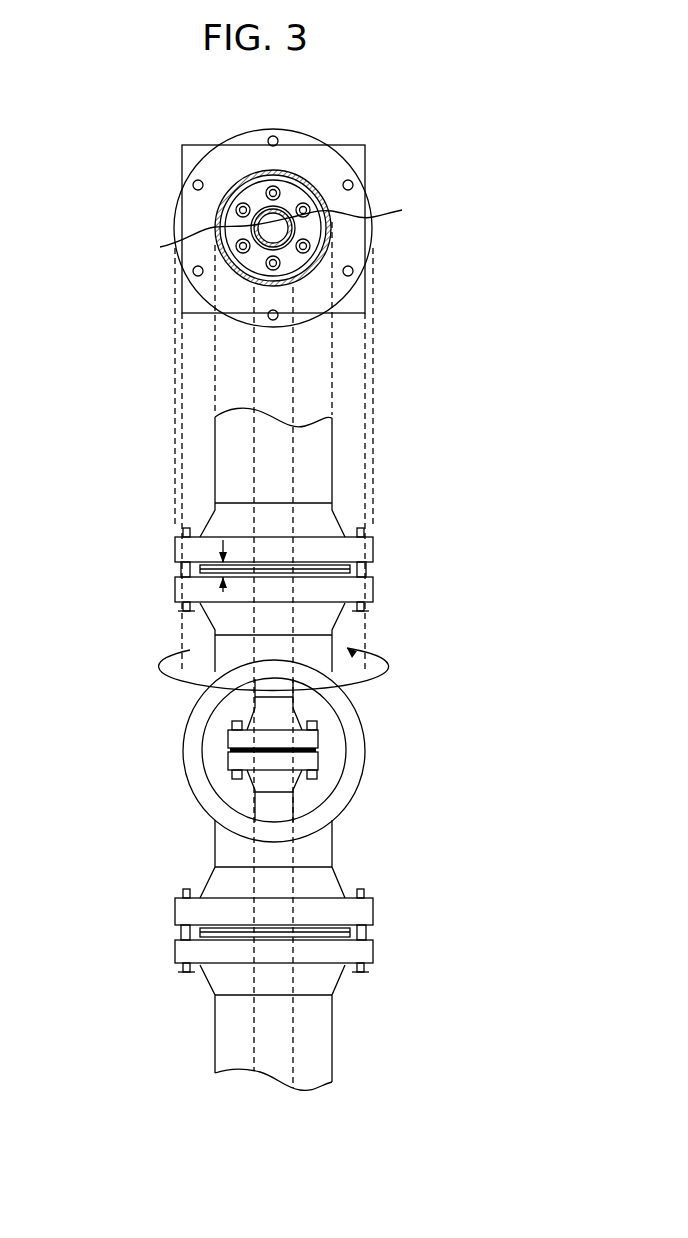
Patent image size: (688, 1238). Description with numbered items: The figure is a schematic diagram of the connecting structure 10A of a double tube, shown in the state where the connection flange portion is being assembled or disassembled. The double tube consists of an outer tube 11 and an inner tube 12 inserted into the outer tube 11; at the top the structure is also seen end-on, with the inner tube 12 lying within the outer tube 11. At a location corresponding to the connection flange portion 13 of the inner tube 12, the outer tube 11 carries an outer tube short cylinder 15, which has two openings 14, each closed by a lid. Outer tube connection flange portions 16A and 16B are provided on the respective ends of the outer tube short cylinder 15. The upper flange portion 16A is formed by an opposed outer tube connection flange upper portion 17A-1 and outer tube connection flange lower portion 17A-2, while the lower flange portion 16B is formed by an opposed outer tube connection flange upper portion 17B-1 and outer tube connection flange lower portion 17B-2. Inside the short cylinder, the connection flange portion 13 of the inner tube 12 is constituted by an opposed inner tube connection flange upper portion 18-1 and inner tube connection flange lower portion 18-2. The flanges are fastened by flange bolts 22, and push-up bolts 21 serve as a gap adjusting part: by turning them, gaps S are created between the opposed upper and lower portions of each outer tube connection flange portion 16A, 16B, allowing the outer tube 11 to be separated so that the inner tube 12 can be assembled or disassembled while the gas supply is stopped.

The connecting structure of the double tube 10A is at (112, 138).
The outer tube 11 is at (373, 217).
The inner tube 12 is at (216, 233).
The connection flange portion 13 is at (97, 725).
The opening 14 is at (367, 766).
The outer tube short cylinder 15 is at (190, 650).
The outer tube connection flange portion 16A is at (472, 540).
The outer tube connection flange portion 16B is at (485, 902).
The outer tube connection flange upper portion 17A-1 is at (377, 552).
The outer tube connection flange lower portion 17A-2 is at (377, 583).
The outer tube connection flange upper portion 17B-1 is at (378, 913).
The outer tube connection flange lower portion 17B-2 is at (378, 945).
The inner tube connection flange upper portion 18-1 is at (228, 737).
The inner tube connection flange lower portion 18-2 is at (228, 758).
The push-up bolt 21 is at (366, 608).
The flange bolt 22 is at (187, 528).
The gap S is at (203, 576).